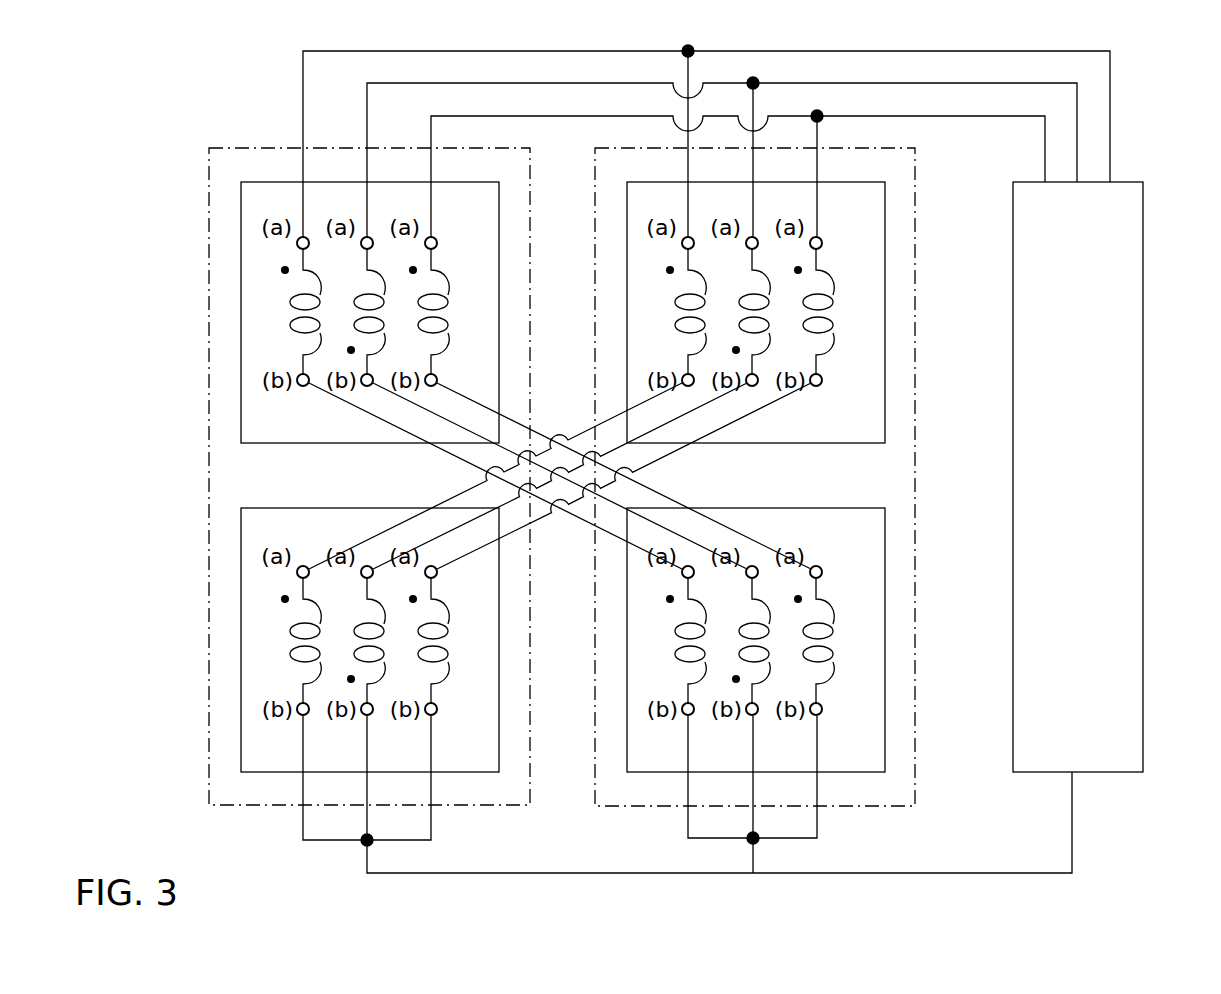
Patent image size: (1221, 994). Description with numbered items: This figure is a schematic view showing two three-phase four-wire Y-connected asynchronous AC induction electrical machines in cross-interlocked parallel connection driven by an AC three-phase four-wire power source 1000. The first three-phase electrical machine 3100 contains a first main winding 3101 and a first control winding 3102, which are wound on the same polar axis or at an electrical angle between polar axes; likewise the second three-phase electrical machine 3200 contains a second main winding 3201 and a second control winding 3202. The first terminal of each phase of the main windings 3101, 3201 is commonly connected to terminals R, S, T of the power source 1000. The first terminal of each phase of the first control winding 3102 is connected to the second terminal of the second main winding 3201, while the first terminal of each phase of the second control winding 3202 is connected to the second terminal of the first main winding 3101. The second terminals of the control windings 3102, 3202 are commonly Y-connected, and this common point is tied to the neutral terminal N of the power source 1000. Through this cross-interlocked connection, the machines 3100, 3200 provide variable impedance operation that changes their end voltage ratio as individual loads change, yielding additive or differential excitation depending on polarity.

The AC 3-phase 4-wire power source 1000 is at (1142, 448).
The first 3-phase electrical machine 3100 is at (209, 499).
The first 3-phase electrical machine main winding 3101 is at (241, 317).
The first 3-phase electrical machine control winding 3102 is at (241, 666).
The second 3-phase electrical machine 3200 is at (915, 539).
The second 3-phase electrical machine main winding 3201 is at (885, 315).
The second 3-phase electrical machine control winding 3202 is at (885, 686).